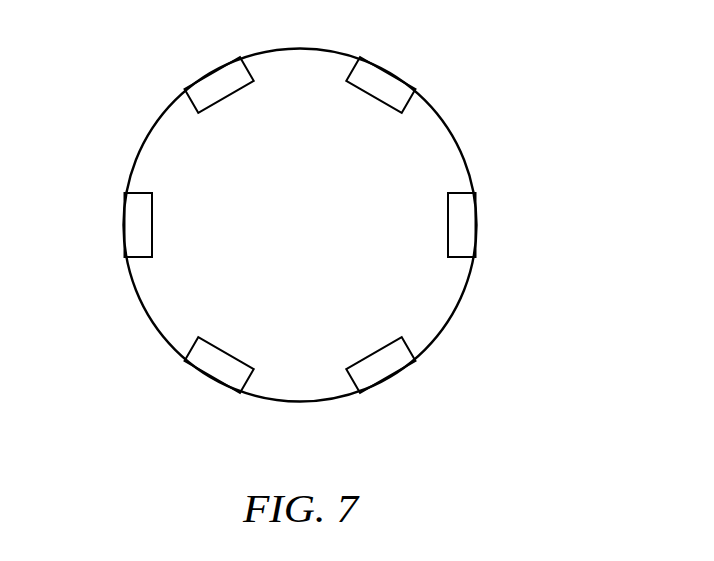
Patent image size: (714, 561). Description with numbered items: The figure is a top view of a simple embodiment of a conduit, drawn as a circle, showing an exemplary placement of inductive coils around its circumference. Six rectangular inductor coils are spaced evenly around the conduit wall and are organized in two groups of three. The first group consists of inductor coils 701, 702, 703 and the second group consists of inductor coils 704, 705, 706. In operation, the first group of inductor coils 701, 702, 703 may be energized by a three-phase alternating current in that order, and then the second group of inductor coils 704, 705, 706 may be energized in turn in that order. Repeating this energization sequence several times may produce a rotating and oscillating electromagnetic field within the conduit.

The inductor coil 701 is at (137, 232).
The inductor coil 702 is at (387, 83).
The inductor coil 703 is at (388, 368).
The inductor coil 704 is at (212, 363).
The inductor coil 705 is at (212, 83).
The inductor coil 706 is at (468, 217).